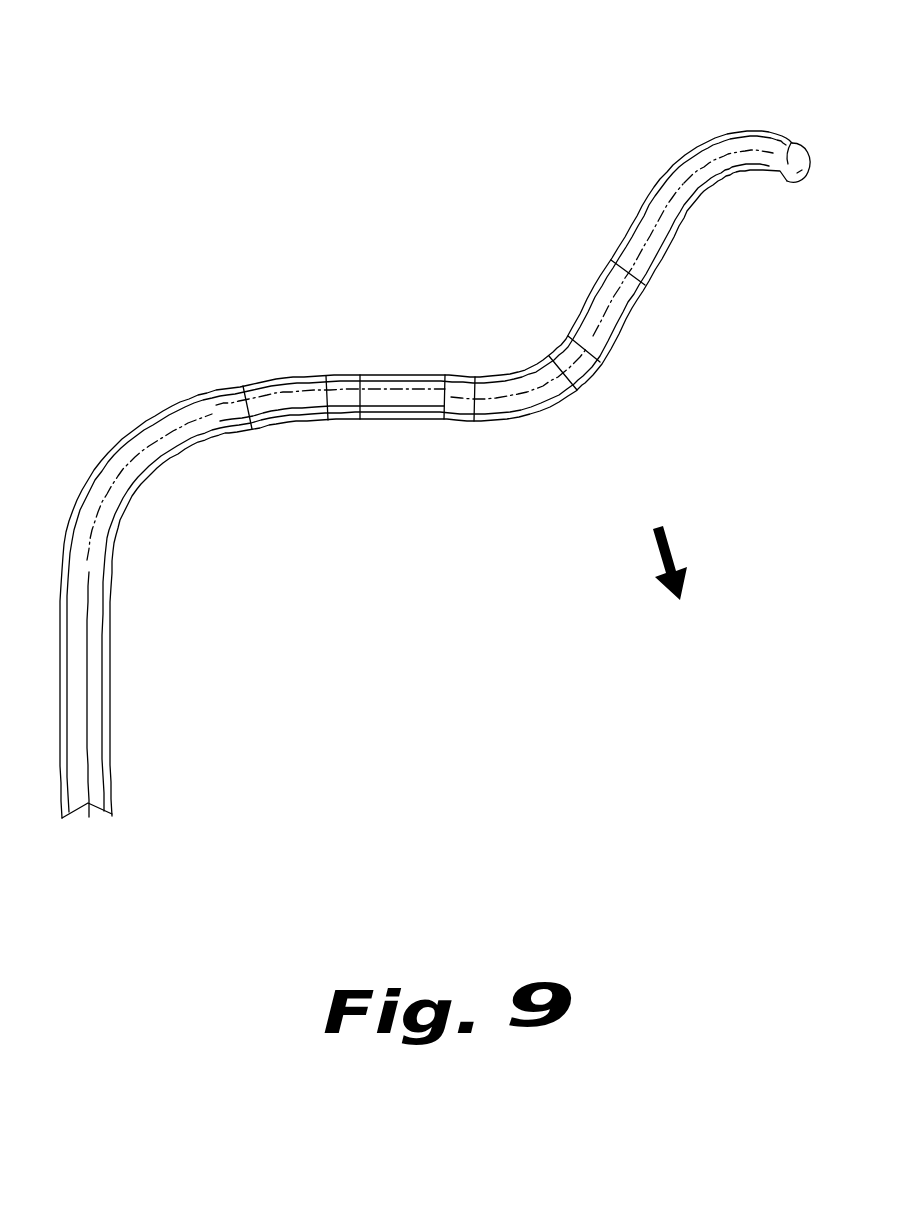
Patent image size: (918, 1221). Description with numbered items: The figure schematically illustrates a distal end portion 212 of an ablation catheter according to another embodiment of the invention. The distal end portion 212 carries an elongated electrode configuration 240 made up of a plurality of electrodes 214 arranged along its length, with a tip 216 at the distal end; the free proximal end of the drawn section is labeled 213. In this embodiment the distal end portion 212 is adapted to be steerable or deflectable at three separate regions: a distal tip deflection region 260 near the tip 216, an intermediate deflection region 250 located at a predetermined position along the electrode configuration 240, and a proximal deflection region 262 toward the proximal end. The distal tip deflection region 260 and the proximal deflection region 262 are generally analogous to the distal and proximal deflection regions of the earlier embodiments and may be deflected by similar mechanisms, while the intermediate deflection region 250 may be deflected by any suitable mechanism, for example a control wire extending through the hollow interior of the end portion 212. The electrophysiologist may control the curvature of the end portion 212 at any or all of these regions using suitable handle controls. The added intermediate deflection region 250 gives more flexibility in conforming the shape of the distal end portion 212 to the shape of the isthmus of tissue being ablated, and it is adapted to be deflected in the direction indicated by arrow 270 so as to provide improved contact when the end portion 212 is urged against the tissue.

The distal end portion 212 is at (215, 178).
The first end of handlebar 213 is at (87, 763).
The electrodes 214 is at (520, 389).
The tip 216 is at (803, 146).
The elongated electrode configuration 240 is at (360, 321).
The intermediate deflection region 250 is at (572, 432).
The distal tip deflection region 260 is at (683, 141).
The proximal deflection region 262 is at (105, 428).
The arrow 270 is at (670, 545).